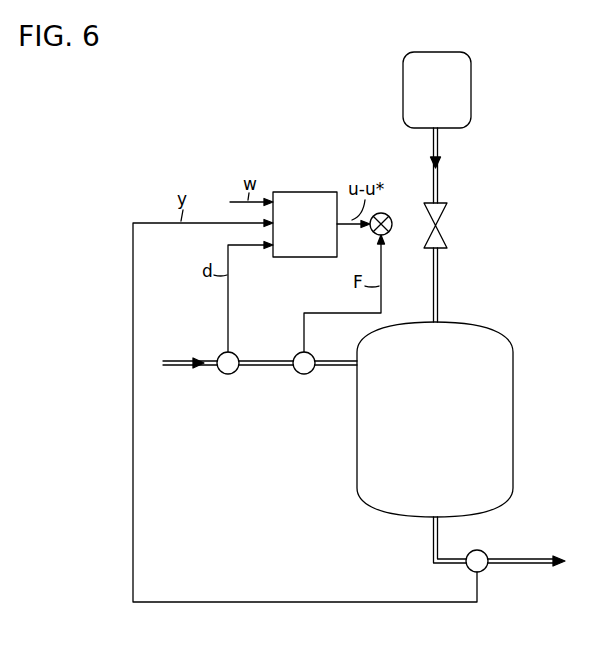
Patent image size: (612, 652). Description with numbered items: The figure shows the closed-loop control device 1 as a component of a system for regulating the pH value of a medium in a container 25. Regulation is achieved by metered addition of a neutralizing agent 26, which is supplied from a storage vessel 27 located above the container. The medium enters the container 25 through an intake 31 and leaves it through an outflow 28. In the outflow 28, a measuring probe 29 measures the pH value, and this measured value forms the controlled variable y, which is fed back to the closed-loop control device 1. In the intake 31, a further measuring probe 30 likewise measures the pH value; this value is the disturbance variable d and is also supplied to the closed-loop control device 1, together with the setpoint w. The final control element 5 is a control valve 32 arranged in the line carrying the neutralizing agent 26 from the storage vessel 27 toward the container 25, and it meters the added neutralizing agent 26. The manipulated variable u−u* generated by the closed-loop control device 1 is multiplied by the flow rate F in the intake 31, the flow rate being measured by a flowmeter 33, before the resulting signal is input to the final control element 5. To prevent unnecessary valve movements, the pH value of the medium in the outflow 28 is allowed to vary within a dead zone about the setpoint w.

The closed-loop control device 1 is at (303, 191).
The final control element 5 is at (466, 262).
The control valve 32 is at (441, 229).
The container 25 is at (357, 437).
The neutralizing agent 26 is at (433, 150).
The storage vessel 27 is at (403, 96).
The outflow 28 is at (527, 564).
The measuring probe 29 is at (484, 552).
The measuring probe 30 is at (228, 374).
The intake 31 is at (181, 362).
The flowmeter 33 is at (304, 374).